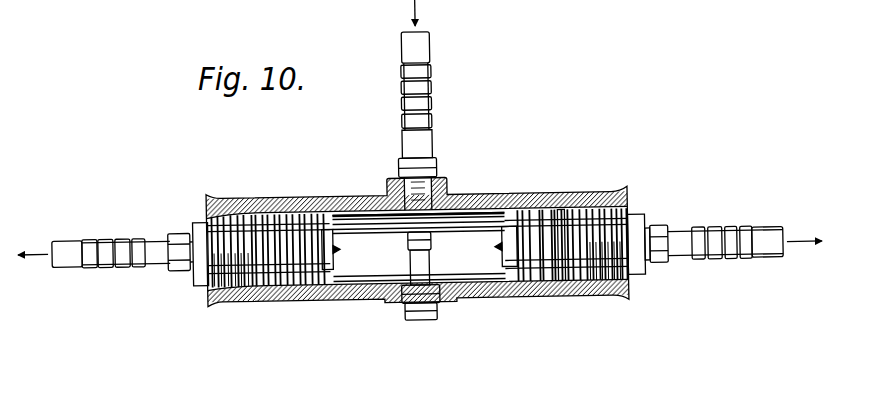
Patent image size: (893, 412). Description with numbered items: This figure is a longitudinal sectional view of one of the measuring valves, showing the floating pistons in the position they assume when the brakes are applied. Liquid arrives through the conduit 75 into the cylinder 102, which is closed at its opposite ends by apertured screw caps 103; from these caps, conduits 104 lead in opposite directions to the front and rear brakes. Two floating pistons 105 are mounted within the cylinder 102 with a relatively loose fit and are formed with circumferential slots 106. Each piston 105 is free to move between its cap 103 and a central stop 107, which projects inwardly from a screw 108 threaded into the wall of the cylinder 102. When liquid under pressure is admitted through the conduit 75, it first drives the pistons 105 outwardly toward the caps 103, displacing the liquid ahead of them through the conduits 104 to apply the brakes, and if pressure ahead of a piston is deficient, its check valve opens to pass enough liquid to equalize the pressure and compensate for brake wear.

The conduit 75 is at (433, 50).
The cylinder 102 is at (588, 203).
The apertured screw cap 103 is at (632, 203).
The conduit 104 is at (763, 233).
The floating piston 105 is at (277, 207).
The circumferential slot 106 is at (562, 207).
The central stop 107 is at (433, 262).
The screw 108 is at (437, 305).